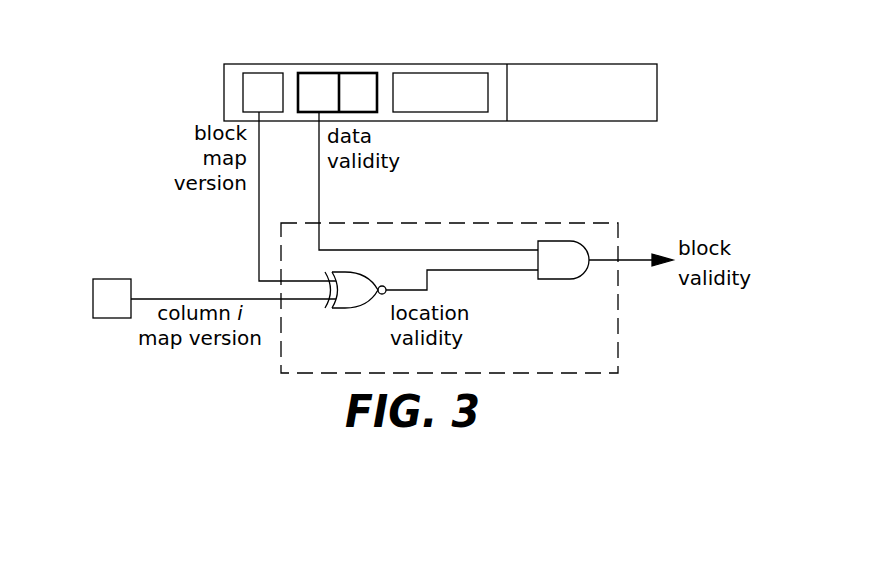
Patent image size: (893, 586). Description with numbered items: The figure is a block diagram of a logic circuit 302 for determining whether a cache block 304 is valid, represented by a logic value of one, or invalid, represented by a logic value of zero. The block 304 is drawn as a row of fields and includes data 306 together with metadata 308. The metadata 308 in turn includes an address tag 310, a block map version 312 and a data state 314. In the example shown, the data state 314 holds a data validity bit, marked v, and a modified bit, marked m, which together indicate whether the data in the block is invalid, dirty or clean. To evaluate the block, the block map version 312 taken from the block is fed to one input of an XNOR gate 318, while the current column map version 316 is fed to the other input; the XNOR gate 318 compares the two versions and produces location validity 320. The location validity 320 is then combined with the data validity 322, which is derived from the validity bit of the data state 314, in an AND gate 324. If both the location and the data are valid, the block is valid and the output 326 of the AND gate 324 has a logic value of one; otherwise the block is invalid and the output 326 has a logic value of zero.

The logic circuit 302 is at (620, 350).
The block 304 is at (194, 71).
The data 306 is at (573, 64).
The metadata 308 is at (452, 64).
The address tag 310 is at (472, 112).
The block map version 312 is at (263, 73).
The data state 314 is at (342, 73).
The current column map version 316 is at (112, 279).
The XNOR gate 318 is at (345, 308).
The location validity 320 is at (490, 270).
The data validity 322 is at (320, 205).
The AND gate 324 is at (560, 241).
The output 326 is at (640, 258).